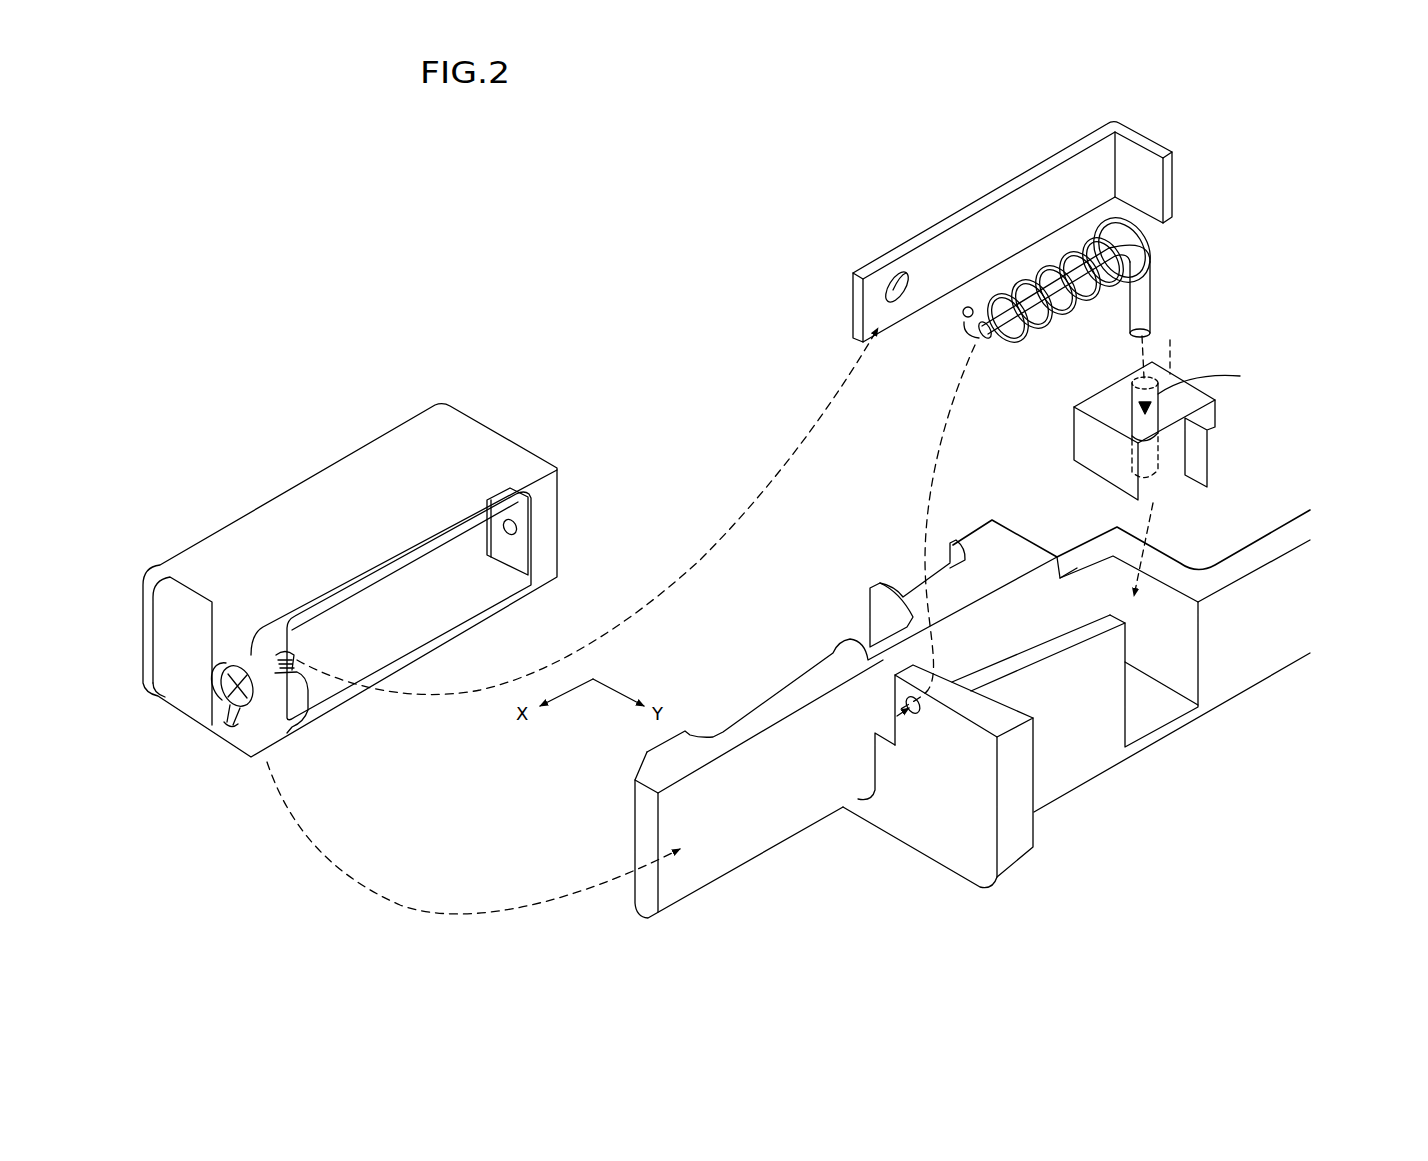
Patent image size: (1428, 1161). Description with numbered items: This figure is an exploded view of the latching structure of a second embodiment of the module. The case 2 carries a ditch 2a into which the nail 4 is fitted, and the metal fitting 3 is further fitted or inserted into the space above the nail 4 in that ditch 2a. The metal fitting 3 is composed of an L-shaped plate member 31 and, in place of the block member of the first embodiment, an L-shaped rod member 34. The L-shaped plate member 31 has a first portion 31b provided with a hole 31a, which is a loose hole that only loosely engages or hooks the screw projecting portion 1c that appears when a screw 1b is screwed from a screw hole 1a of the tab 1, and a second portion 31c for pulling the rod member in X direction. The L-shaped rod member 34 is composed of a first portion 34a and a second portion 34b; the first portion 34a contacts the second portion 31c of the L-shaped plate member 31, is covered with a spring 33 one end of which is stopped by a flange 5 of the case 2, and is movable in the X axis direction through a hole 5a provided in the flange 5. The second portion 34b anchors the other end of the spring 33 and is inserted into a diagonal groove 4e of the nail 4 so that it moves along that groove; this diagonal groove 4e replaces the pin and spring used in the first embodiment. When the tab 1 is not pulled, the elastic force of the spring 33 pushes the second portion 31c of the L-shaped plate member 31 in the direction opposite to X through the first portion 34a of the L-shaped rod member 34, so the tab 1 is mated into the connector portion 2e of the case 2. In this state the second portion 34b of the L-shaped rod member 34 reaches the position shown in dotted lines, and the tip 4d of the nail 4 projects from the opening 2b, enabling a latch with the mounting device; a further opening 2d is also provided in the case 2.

The tab 1 is at (452, 414).
The screw hole 1a is at (230, 718).
The screw 1b is at (236, 708).
The screw projecting portion 1c is at (300, 714).
The case 2 is at (1090, 763).
The ditch 2a is at (1067, 617).
The opening 2b is at (1147, 705).
The opening 2d is at (865, 646).
The connector portion 2e is at (727, 847).
The metal fitting 3 is at (750, 303).
The L-shaped plate member 31 is at (880, 254).
The hole 31a is at (901, 300).
The first portion 31b is at (975, 202).
The second portion 31c is at (1138, 128).
The spring 33 is at (976, 346).
The L-shaped rod member 34 is at (1220, 269).
The first portion 34a is at (1020, 330).
The second portion 34b is at (1154, 320).
The nail 4 is at (1216, 420).
The tip 4d is at (1218, 462).
The diagonal groove 4e is at (1237, 376).
The flange 5 is at (1025, 847).
The hole 5a is at (918, 710).